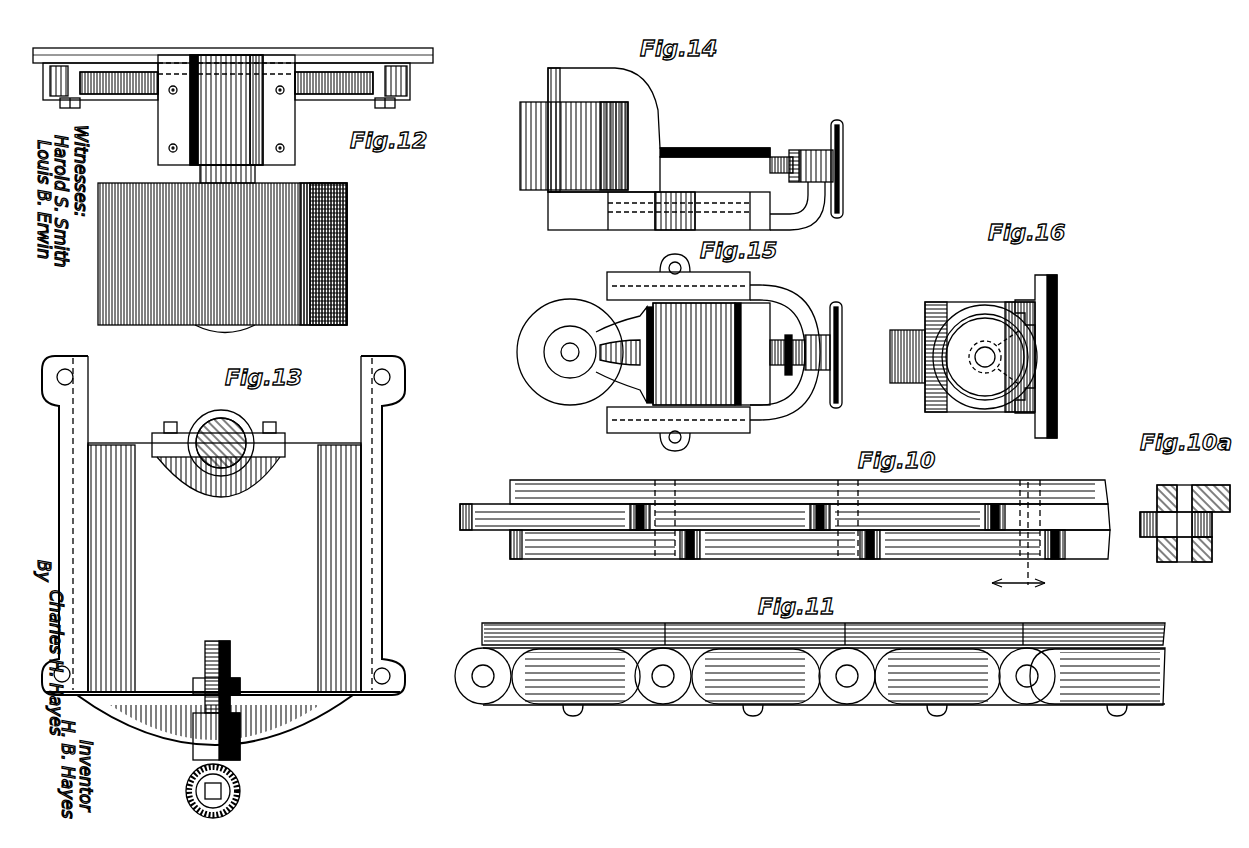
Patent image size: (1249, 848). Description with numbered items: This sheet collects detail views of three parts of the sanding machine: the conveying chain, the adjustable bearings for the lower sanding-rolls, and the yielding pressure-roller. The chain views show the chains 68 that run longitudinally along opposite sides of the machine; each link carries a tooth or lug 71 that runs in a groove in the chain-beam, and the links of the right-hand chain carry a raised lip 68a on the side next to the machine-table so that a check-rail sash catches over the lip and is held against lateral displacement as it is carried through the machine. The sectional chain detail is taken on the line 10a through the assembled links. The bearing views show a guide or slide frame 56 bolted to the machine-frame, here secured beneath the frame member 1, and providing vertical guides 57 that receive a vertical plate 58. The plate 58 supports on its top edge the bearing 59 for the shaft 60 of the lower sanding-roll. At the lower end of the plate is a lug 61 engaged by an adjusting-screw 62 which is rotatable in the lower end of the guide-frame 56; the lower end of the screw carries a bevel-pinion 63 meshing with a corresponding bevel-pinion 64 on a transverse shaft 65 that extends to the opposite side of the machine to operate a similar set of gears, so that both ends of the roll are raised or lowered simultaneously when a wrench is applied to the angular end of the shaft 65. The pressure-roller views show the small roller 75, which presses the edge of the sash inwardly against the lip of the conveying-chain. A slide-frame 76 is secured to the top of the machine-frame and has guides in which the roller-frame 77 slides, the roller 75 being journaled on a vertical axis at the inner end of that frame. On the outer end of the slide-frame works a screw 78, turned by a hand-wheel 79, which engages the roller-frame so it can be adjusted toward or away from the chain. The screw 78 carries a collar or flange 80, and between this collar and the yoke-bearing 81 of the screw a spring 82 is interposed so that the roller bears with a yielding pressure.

In FIG. 12, the table top 1 is at (433, 55).
In FIG. 12, the guide or slide frame 56 is at (410, 88).
In FIG. 13, the guide or slide frame 56 is at (372, 560).
In FIG. 12, the vertical guides 57 is at (90, 72).
In FIG. 13, the vertical plate 58 is at (219, 594).
In FIG. 12, the bearing 59 is at (285, 157).
In FIG. 13, the bearing 59 is at (212, 478).
In FIG. 12, the shaft 60 is at (200, 176).
In FIG. 13, the shaft 60 is at (212, 425).
In FIG. 13, the lug 61 is at (242, 688).
In FIG. 13, the adjusting-screw 62 is at (206, 645).
In FIG. 13, the bevel-pinion 63 is at (240, 757).
In FIG. 13, the bevel-pinion 64 is at (240, 793).
In FIG. 13, the transverse shaft 65 is at (230, 806).
In FIG. 10, the chains 68 is at (640, 548).
In FIG. 10A, the chains 68 is at (1167, 562).
In FIG. 11, the chains 68 is at (618, 690).
In FIG. 10, the raised lip 68a is at (557, 482).
In FIG. 10A, the raised lip 68a is at (1222, 478).
In FIG. 11, the raised lip 68a is at (1166, 640).
In FIG. 11, the tooth or lug 71 is at (562, 712).
In FIG. 14, the roller 75 is at (520, 160).
In FIG. 15, the roller 75 is at (517, 352).
In FIG. 14, the slide-frame 76 is at (623, 220).
In FIG. 15, the slide-frame 76 is at (740, 433).
In FIG. 16, the slide-frame 76 is at (1058, 303).
In FIG. 14, the roller-frame 77 is at (560, 72).
In FIG. 15, the roller-frame 77 is at (565, 332).
In FIG. 15, the screw 78 is at (790, 345).
In FIG. 14, the hand-wheel 79 is at (845, 208).
In FIG. 15, the hand-wheel 79 is at (845, 308).
In FIG. 16, the hand-wheel 79 is at (980, 405).
In FIG. 14, the collar or flange 80 is at (787, 152).
In FIG. 15, the collar or flange 80 is at (788, 372).
In FIG. 14, the yoke-bearing 81 is at (808, 220).
In FIG. 15, the yoke-bearing 81 is at (797, 406).
In FIG. 14, the spring 82 is at (797, 150).
In FIG. 10, the section line 10a is at (1020, 544).